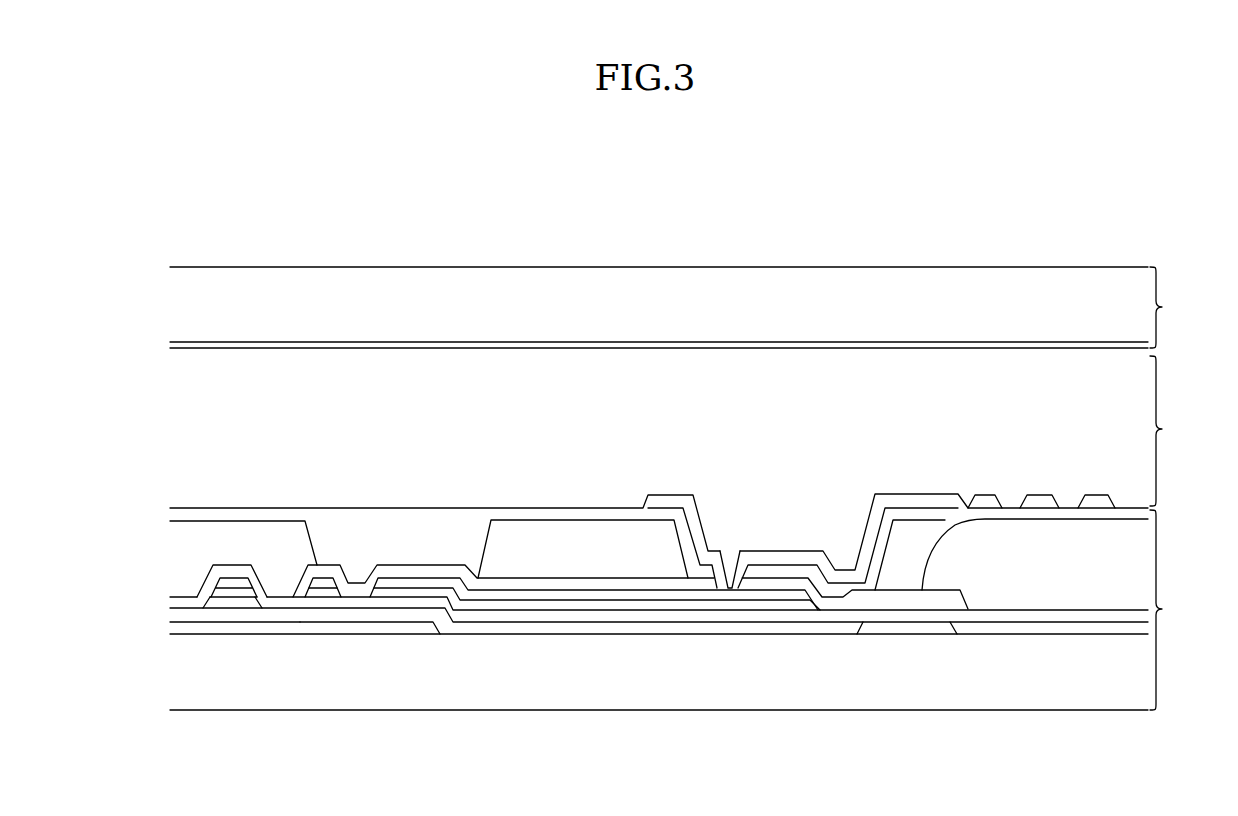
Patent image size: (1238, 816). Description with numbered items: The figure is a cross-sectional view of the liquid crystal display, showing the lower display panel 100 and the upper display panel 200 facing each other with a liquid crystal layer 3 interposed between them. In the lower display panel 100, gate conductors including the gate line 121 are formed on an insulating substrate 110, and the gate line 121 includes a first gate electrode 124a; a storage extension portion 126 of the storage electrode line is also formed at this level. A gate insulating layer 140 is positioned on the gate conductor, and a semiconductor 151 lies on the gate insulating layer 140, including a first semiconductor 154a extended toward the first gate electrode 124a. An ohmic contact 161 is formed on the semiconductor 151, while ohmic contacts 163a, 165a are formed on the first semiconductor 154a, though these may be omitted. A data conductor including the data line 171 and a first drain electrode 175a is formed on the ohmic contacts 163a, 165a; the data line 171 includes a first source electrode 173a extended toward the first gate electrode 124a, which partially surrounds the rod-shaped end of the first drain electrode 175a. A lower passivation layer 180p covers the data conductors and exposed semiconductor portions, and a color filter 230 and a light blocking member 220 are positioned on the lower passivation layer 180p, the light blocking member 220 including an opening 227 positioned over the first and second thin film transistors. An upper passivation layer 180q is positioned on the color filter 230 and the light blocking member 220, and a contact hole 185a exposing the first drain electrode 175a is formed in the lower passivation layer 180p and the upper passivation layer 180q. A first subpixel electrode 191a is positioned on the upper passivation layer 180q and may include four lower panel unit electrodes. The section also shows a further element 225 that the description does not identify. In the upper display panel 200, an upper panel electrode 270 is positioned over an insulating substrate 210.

The liquid crystal layer 3 is at (1170, 431).
The lower display panel 100 is at (1180, 610).
The insulating substrate 110 is at (611, 687).
The gate line 121 is at (197, 628).
The first gate electrode 124a is at (362, 627).
The storage extension portion 126 is at (905, 628).
The gate insulating layer 140 is at (533, 628).
The semiconductor 151 is at (243, 601).
The first semiconductor 154a is at (400, 603).
The ohmic contact 161 is at (220, 605).
The ohmic contact 163a is at (322, 595).
The ohmic contact 165a is at (435, 595).
The data line 171 is at (228, 590).
The first source electrode 173a is at (327, 583).
The first drain electrode 175a is at (403, 583).
The lower passivation layer 180p is at (553, 587).
The upper passivation layer 180q is at (610, 510).
The contact hole 185a is at (723, 578).
The first subpixel electrode 191a is at (977, 500).
The upper display panel 200 is at (1180, 307).
The insulating substrate 210 is at (536, 288).
The light blocking member 220 is at (510, 535).
The overlapping color filter portion 225 is at (685, 545).
The opening 227 is at (313, 545).
The color filter 230 is at (1043, 575).
The upper panel electrode 270 is at (640, 352).